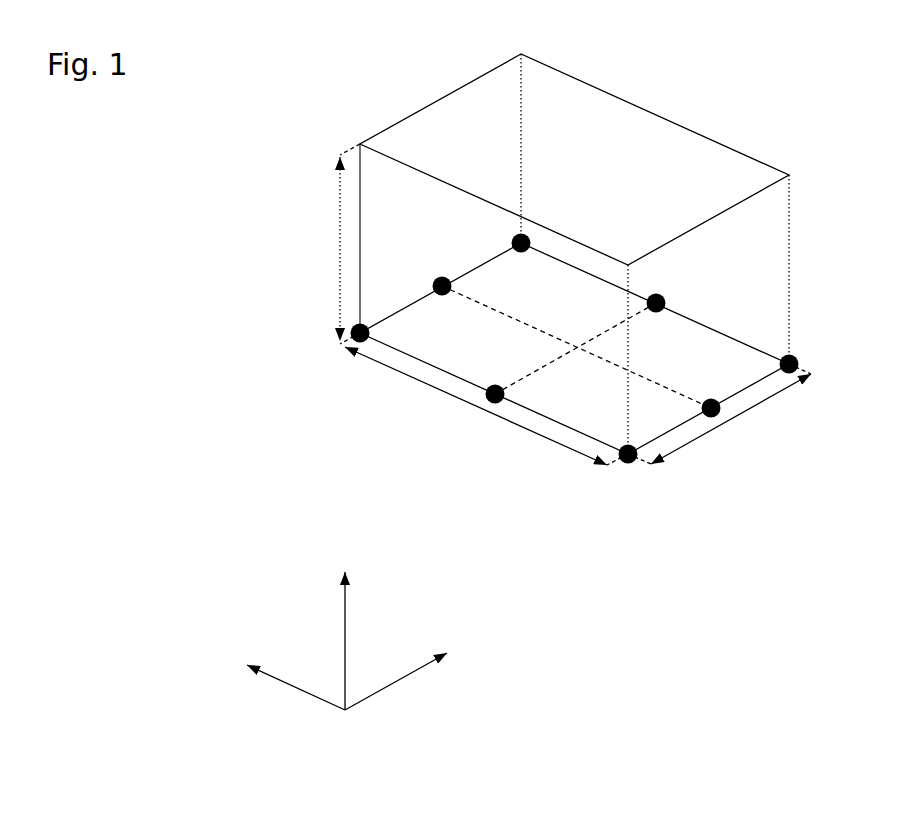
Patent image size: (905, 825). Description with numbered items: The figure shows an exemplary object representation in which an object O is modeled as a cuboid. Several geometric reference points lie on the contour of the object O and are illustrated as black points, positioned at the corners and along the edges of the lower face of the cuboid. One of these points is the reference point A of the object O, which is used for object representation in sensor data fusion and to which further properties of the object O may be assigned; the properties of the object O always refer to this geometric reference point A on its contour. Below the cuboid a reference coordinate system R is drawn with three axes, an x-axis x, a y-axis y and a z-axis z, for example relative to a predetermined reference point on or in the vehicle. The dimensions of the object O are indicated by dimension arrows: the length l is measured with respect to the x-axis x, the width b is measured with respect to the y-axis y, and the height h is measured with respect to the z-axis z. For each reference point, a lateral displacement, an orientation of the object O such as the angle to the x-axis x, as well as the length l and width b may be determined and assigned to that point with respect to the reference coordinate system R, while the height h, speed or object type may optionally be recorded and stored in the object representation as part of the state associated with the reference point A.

The object O is at (400, 85).
The height h is at (340, 232).
The length l is at (460, 400).
The width b is at (733, 422).
The reference point A is at (636, 465).
The reference coordinate system R is at (340, 650).
The x-axis x is at (285, 672).
The y-axis y is at (409, 672).
The z-axis z is at (344, 622).